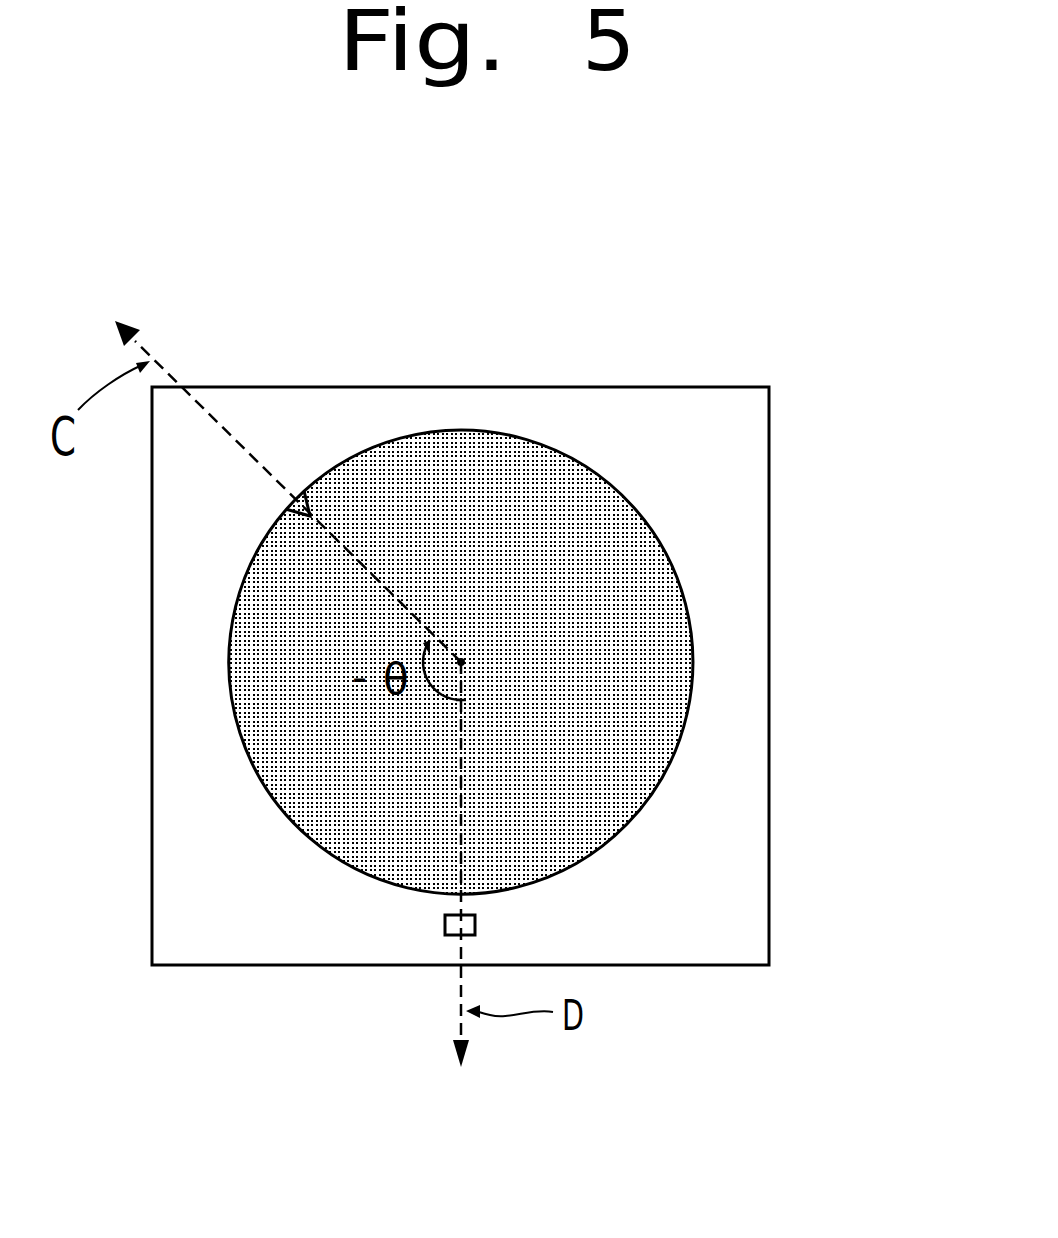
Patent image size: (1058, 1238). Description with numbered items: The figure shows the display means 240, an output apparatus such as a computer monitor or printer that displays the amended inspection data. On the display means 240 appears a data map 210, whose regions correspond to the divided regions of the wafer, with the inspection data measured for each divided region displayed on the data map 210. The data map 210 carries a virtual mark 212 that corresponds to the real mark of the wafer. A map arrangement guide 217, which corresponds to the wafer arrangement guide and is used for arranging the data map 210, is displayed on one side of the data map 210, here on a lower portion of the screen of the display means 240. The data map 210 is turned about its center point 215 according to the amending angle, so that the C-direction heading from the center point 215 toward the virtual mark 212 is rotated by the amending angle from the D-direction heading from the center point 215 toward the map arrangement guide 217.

The data map 210 is at (458, 455).
The virtual mark 212 is at (299, 502).
The center point 215 is at (466, 660).
The map arrangement guide 217 is at (476, 925).
The display means 240 is at (770, 555).